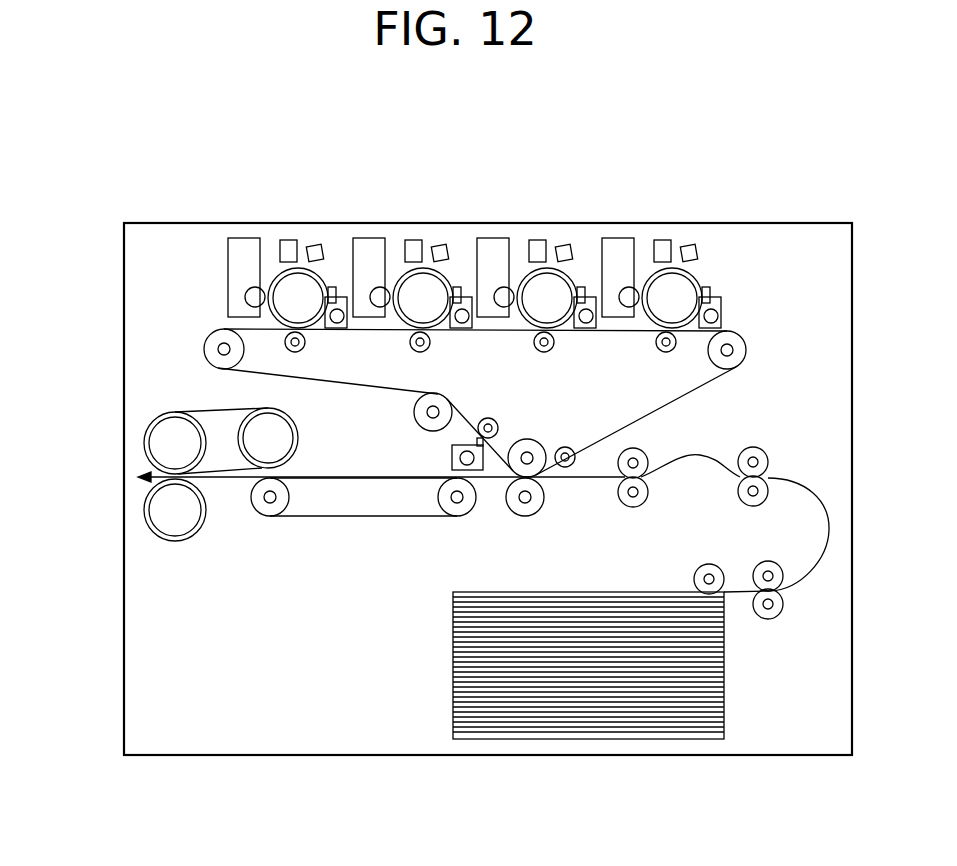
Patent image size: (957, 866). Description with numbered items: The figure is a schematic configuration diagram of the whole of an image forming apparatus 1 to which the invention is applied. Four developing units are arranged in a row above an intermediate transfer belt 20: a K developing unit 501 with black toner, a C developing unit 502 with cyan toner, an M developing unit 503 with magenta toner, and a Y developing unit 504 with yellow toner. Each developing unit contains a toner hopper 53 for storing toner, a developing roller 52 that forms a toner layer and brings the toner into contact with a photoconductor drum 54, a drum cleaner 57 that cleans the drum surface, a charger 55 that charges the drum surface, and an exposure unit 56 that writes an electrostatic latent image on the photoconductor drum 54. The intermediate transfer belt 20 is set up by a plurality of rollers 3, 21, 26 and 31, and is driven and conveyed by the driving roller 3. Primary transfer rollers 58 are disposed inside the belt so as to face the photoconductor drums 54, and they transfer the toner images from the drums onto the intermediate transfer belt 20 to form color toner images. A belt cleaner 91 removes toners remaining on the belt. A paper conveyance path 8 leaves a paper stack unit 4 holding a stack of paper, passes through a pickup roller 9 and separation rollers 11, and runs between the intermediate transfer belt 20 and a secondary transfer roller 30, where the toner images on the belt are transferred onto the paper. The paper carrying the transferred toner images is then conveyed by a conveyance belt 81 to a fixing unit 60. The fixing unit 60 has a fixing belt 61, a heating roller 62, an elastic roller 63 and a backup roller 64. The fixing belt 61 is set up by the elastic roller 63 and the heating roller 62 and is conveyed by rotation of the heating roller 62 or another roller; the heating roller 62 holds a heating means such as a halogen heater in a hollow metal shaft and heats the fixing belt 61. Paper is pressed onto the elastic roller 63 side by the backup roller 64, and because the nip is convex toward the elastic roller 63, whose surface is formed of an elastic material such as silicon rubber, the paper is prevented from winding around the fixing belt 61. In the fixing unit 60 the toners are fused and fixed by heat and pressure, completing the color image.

The image forming apparatus 1 is at (135, 247).
The K developing unit 501 is at (253, 206).
The C developing unit 502 is at (432, 235).
The M developing unit 503 is at (549, 232).
The Y developing unit 504 is at (683, 233).
The developing roller 52 is at (252, 296).
The toner hopper 53 is at (235, 243).
The photoconductor drum 54 is at (288, 283).
The charger 55 is at (286, 241).
The exposure unit 56 is at (312, 247).
The drum cleaner 57 is at (346, 245).
The primary transfer roller 58 is at (306, 348).
The roller 26 is at (222, 350).
The driving roller 3 is at (745, 350).
The intermediate transfer belt 20 is at (658, 412).
The roller 21 is at (438, 403).
The roller 31 is at (535, 447).
The secondary transfer roller 30 is at (517, 507).
The belt cleaner 91 is at (452, 458).
The paper conveyance path 8 is at (363, 528).
The conveyance belt 81 is at (304, 518).
The pickup roller 9 is at (706, 566).
The separation rollers 11 is at (770, 607).
The paper stack unit 4 is at (475, 707).
The fixing unit 60 is at (149, 446).
The fixing belt 61 is at (232, 408).
The heating roller 62 is at (258, 428).
The elastic roller 63 is at (163, 445).
The backup roller 64 is at (133, 510).